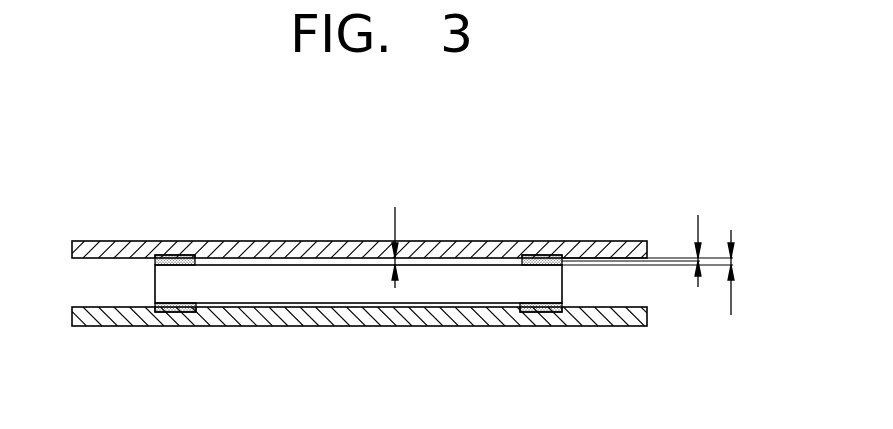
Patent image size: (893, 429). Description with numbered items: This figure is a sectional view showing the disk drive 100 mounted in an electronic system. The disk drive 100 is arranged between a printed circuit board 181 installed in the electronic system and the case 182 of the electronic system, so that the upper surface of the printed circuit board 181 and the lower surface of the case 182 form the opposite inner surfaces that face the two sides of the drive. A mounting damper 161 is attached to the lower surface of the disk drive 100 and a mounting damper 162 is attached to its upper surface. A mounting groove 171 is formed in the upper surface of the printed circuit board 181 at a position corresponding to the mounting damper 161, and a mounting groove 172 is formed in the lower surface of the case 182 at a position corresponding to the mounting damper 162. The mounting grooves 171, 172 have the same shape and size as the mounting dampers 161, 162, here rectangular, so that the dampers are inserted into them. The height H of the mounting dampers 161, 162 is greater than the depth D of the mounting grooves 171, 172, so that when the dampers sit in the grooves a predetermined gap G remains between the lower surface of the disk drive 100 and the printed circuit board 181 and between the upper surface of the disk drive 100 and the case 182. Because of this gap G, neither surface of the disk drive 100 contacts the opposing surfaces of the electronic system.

The disk drive 100 is at (325, 293).
The mounting damper 161 is at (185, 317).
The mounting damper 162 is at (165, 257).
The mounting groove 171 is at (160, 318).
The mounting groove 172 is at (188, 253).
The printed circuit board 181 is at (87, 328).
The case 182 is at (316, 250).
The gap G is at (383, 247).
The depth of the mounting grooves D is at (647, 250).
The height of the mounting dampers H is at (721, 275).